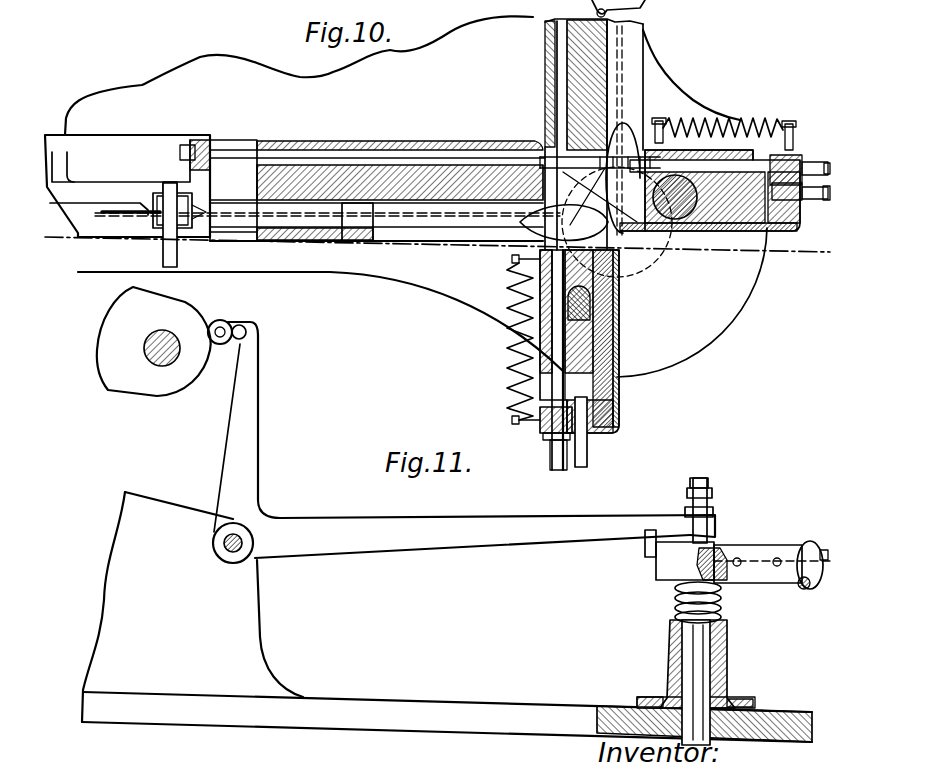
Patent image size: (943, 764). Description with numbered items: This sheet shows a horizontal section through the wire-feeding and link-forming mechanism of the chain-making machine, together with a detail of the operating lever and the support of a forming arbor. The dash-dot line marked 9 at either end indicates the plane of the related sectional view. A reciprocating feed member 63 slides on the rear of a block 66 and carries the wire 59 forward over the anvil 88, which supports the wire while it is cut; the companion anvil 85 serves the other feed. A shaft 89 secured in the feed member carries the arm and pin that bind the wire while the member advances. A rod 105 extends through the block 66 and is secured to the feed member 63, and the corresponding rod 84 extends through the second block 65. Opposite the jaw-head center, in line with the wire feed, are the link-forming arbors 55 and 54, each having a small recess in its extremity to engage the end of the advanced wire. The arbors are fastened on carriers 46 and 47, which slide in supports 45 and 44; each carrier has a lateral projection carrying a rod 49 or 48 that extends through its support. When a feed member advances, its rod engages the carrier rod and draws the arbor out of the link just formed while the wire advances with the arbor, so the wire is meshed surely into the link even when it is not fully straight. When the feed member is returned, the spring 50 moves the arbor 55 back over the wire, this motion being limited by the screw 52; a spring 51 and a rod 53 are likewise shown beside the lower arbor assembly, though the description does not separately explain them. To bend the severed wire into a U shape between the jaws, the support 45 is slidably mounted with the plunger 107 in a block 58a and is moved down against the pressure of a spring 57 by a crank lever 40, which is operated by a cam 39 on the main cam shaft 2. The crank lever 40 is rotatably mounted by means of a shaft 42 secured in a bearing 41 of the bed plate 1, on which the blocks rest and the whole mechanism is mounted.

In FIG. 10, the bed-plate 1 is at (306, 82).
In FIG. 11, the bed-plate 1 is at (398, 707).
In FIG. 11, the main cam shaft 2 is at (162, 340).
In FIG. 10, the section line 9- 9 is at (437, 260).
In FIG. 11, the cam 39 is at (137, 383).
In FIG. 11, the crank lever 40 is at (243, 500).
In FIG. 11, the bearing 41 is at (258, 627).
In FIG. 11, the shaft 42 is at (225, 550).
In FIG. 10, the support 44 is at (563, 393).
In FIG. 10, the support 45 is at (735, 165).
In FIG. 11, the support 45 is at (657, 568).
In FIG. 10, the carrier 46 is at (800, 221).
In FIG. 10, the carrier 47 is at (597, 437).
In FIG. 10, the rod 48 is at (552, 457).
In FIG. 10, the rod 49 is at (812, 168).
In FIG. 11, the rod 49 is at (645, 553).
In FIG. 10, the spring 50 is at (723, 121).
In FIG. 10, the return spring 51 is at (508, 370).
In FIG. 10, the screw 52 is at (808, 190).
In FIG. 11, the screw 52 is at (803, 589).
In FIG. 10, the guide rod 53 is at (580, 453).
In FIG. 10, the link-forming arbor 54 is at (619, 359).
In FIG. 10, the link-forming arbor 55 is at (697, 231).
In FIG. 11, the link-forming arbor 55 is at (716, 566).
In FIG. 11, the spring 57 is at (676, 606).
In FIG. 11, the block 58a is at (728, 674).
In FIG. 10, the wire 59 is at (143, 214).
In FIG. 10, the feed member 63 is at (88, 190).
In FIG. 10, the block 65 is at (549, 30).
In FIG. 10, the block 66 is at (322, 142).
In FIG. 10, the rod 84 is at (560, 68).
In FIG. 10, the anvil 85 is at (633, 50).
In FIG. 10, the anvil 88 is at (436, 238).
In FIG. 10, the shaft 89 is at (173, 262).
In FIG. 10, the rod 105 is at (450, 162).
In FIG. 11, the plunger 107 is at (720, 657).